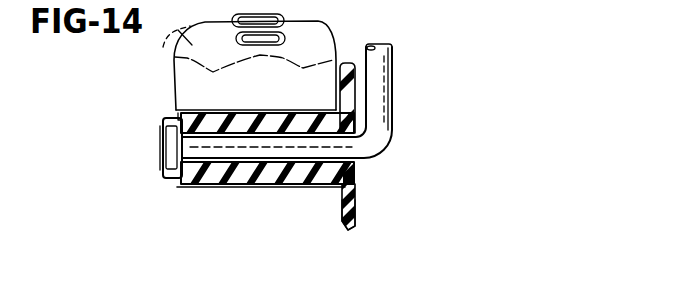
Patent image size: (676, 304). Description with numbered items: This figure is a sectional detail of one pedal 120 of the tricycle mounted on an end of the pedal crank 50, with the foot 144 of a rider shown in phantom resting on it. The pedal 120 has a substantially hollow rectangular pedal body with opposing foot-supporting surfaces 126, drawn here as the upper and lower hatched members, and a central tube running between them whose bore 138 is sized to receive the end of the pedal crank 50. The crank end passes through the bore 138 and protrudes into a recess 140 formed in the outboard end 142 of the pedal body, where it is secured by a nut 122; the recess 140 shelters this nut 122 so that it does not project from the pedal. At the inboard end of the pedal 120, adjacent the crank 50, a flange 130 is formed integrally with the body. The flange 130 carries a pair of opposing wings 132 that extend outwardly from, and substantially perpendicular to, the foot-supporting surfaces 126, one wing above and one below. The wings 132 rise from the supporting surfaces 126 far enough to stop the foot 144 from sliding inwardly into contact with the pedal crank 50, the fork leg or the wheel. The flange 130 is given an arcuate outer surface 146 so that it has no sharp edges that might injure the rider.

The pedal crank 50 is at (383, 114).
The pedal 120 is at (254, 187).
The nut 122 is at (166, 153).
The foot-supporting surface 126 is at (242, 111).
The flange 130 is at (353, 210).
The wing 132 is at (350, 92).
The bore 138 is at (183, 185).
The recess 140 is at (160, 128).
The outboard end 142 is at (165, 121).
The foot 144 is at (166, 41).
The arcuate outer surface 146 is at (351, 62).